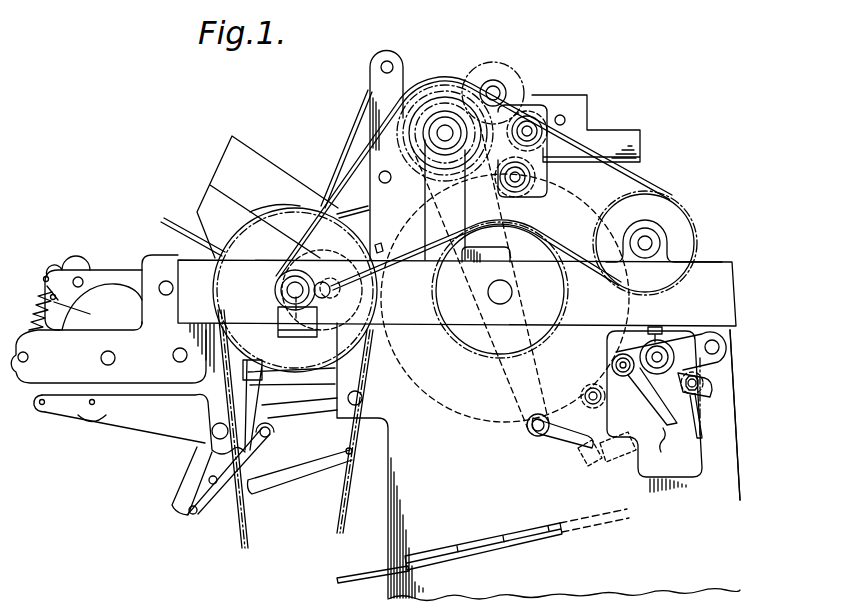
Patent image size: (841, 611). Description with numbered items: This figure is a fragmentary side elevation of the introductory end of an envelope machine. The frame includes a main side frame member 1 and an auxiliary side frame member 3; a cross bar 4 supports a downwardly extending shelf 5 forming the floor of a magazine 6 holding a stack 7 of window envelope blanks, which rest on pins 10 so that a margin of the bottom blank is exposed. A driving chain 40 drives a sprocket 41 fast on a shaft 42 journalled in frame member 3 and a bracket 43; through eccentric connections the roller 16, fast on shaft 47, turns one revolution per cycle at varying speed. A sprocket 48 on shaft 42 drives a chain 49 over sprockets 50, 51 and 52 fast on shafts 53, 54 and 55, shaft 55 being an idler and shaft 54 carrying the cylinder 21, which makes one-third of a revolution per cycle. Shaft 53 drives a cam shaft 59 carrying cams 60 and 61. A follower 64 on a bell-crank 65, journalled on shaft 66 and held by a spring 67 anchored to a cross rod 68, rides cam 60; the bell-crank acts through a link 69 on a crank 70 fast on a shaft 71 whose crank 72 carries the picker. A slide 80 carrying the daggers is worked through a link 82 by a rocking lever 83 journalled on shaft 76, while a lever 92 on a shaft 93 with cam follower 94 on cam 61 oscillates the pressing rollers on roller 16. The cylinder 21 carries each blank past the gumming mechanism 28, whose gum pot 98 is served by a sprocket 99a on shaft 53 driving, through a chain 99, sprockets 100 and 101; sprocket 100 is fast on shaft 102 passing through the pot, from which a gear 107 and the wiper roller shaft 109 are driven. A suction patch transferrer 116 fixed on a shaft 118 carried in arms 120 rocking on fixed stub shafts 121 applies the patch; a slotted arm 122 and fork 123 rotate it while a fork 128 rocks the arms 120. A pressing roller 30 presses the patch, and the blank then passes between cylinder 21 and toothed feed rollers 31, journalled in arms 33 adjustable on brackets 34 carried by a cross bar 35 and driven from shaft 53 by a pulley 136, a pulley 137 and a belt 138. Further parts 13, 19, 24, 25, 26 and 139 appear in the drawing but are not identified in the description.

The main side frame member 1 is at (736, 500).
The auxiliary side frame member 3 is at (718, 282).
The cross bar 4 is at (387, 74).
The shelf 5 is at (355, 132).
The magazine 6 is at (181, 179).
The stack 7 is at (252, 152).
The pins 10 is at (170, 222).
The bracket 13 is at (252, 368).
The roller 16 is at (326, 328).
The lever 19 is at (283, 383).
The cylinder 21 is at (440, 408).
The belt 24 is at (384, 246).
The belt 25 is at (354, 224).
The belt 26 is at (360, 206).
The gumming mechanism 28 is at (540, 74).
The pressing roller 30 is at (590, 394).
The feed rollers 31 is at (548, 440).
The arms 33 is at (585, 400).
The brackets 34 is at (580, 456).
The cross bar 35 is at (614, 460).
The driving chain 40 is at (250, 216).
The sprocket 41 is at (272, 222).
The shaft 42 is at (314, 290).
The bracket 43 is at (296, 318).
The shaft 47 is at (336, 296).
The sprocket 48 is at (282, 291).
The chain 49 is at (414, 250).
The sprocket 50 is at (391, 182).
The sprocket 51 is at (455, 330).
The sprocket 52 is at (692, 220).
The shaft 53 is at (446, 128).
The shaft 54 is at (513, 292).
The idler shaft 55 is at (646, 240).
The cam shaft 59 is at (115, 359).
The cam 60 is at (92, 322).
The cam 61 is at (53, 322).
The follower 64 is at (90, 418).
The bell-crank 65 is at (133, 417).
The shaft 66 is at (210, 429).
The spring 67 is at (40, 407).
The cross rod 68 is at (21, 364).
The link 69 is at (300, 470).
The crank 70 is at (360, 440).
The shaft 71 is at (355, 391).
The crank 72 is at (322, 408).
The shaft 76 is at (177, 361).
The slide 80 is at (190, 462).
The link 82 is at (208, 492).
The rocking lever 83 is at (272, 428).
The lever 92 is at (114, 278).
The shaft 93 is at (165, 295).
The cam follower 94 is at (76, 268).
The gum pot 98 is at (624, 138).
The chain 99 is at (439, 92).
The sprocket 99a is at (424, 100).
The sprocket 100 is at (561, 116).
The idler sprocket 101 is at (530, 185).
The shaft 102 is at (545, 133).
The gear 107 is at (493, 72).
The shaft 109 is at (567, 121).
The suction patch transferrer 116 is at (654, 326).
The shaft 118 is at (652, 372).
The arms 120 is at (680, 345).
The stub shafts 121 is at (720, 354).
The slotted arm 122 is at (676, 386).
The fork 123 is at (697, 442).
The fork 128 is at (663, 442).
The pulley 136 is at (462, 200).
The pulley 137 is at (532, 436).
The belt 138 is at (500, 374).
The rail 139 is at (350, 578).